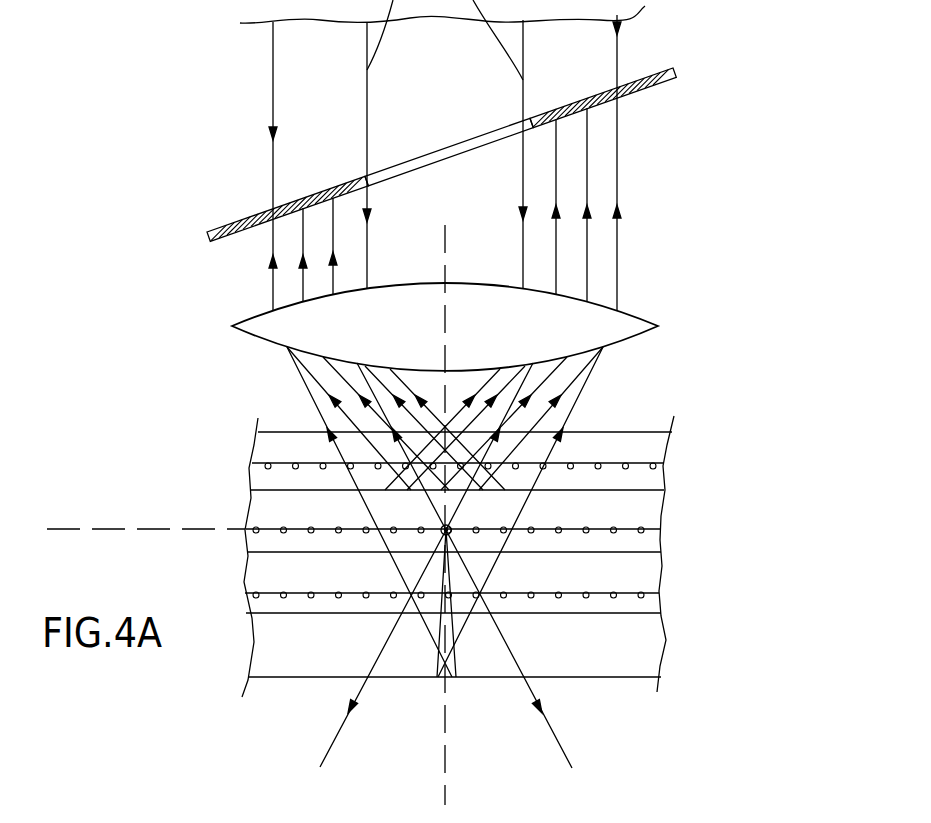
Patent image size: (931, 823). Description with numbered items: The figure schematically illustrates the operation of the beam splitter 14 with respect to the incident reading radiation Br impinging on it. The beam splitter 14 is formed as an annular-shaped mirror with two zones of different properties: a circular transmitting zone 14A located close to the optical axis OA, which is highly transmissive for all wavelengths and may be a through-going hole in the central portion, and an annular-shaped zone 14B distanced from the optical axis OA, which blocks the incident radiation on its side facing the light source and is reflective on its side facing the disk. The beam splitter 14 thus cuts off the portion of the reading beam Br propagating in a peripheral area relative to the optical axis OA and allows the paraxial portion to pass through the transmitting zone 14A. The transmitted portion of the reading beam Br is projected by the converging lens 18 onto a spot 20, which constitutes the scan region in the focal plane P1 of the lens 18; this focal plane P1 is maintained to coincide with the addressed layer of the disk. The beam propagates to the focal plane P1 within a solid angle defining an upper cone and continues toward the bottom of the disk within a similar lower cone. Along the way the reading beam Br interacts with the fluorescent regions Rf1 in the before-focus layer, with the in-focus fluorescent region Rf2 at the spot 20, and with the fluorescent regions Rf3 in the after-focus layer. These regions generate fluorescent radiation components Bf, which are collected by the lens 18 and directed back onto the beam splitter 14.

The beam splitter 14 is at (452, 132).
The transmitting zone 14A is at (442, 150).
The annular-shaped zone 14B is at (237, 221).
The converging lens 18 is at (592, 302).
The spot 20 is at (446, 530).
The reading radiation Br is at (605, 730).
The fluorescent radiation Bf is at (350, 381).
The fluorescent regions of the before-focus layer Rf1 is at (470, 505).
The in-focus fluorescent region Rf2 is at (446, 530).
The fluorescent regions of the after-focus layer Rf3 is at (412, 597).
The focal plane P1 is at (145, 528).
The optical axis OA is at (447, 752).